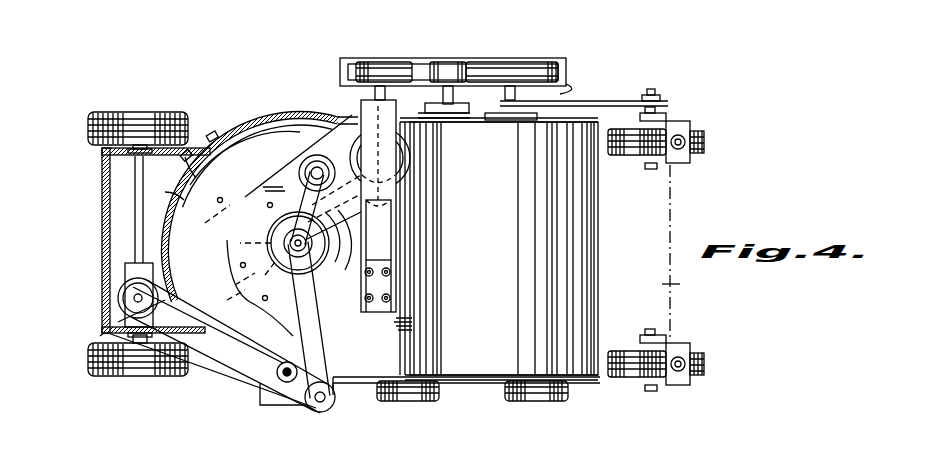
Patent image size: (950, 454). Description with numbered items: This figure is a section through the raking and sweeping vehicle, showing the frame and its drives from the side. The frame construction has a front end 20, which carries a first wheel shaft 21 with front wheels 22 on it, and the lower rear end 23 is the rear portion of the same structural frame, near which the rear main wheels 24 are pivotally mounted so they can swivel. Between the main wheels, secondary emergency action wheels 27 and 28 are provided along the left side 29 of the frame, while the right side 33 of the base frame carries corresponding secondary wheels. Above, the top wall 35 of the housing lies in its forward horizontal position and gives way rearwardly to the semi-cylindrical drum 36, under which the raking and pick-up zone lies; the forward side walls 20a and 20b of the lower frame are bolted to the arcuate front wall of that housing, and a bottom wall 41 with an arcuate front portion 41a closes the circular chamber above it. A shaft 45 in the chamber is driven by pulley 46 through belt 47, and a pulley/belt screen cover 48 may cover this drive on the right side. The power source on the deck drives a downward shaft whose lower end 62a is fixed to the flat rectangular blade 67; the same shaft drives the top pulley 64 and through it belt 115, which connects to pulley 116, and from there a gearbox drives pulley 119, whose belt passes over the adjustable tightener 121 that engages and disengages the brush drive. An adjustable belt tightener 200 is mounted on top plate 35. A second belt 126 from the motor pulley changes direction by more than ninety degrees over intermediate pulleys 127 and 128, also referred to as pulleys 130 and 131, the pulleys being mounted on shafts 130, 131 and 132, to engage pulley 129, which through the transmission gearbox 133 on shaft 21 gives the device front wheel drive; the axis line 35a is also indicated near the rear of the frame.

The front end 20 is at (103, 216).
The forward side wall 20a is at (182, 290).
The forward side wall 20b is at (196, 177).
The first wheel shaft 21 is at (135, 176).
The front wheels 22 is at (172, 113).
The lower rear end 23 is at (672, 196).
The rear main wheels 24 is at (696, 126).
The secondary emergency action wheel 27 is at (438, 396).
The secondary emergency action wheel 28 is at (568, 396).
The left side 29 is at (352, 385).
The right side 33 is at (337, 118).
The top wall 35 is at (466, 256).
The axis line 35a is at (674, 286).
The drum 36 is at (499, 246).
The bottom wall 41 is at (242, 150).
The arcuate front portion 41a is at (174, 197).
The shaft 45 is at (478, 106).
The pulley 46 is at (516, 62).
The belt 47 is at (556, 88).
The pulley/belt screen cover 48 is at (446, 58).
The lower end of shaft 62a is at (270, 232).
The top pulley 64 is at (413, 170).
The blade 67 is at (232, 308).
The belt 115 is at (333, 237).
The pulley 116 is at (378, 199).
The pulley 119 is at (386, 60).
The adjustable tightener 121 is at (474, 62).
The belt 126 is at (395, 322).
The intermediate pulley 127 is at (316, 412).
The intermediate pulley 128 is at (270, 388).
The pulley 129 is at (125, 296).
The shaft 130 is at (323, 403).
The shaft 131 is at (283, 362).
The shaft 132 is at (120, 318).
The gearbox 133 is at (125, 270).
The adjustable belt tightener 200 is at (300, 159).